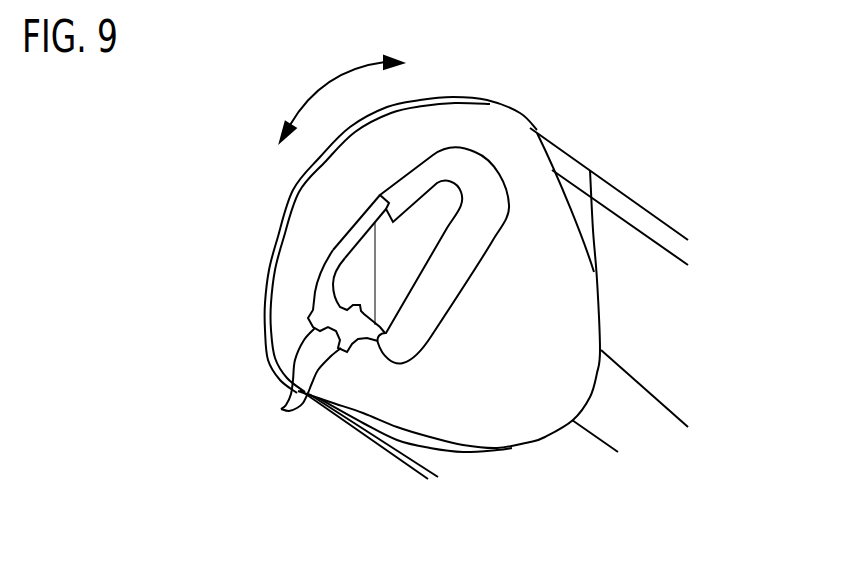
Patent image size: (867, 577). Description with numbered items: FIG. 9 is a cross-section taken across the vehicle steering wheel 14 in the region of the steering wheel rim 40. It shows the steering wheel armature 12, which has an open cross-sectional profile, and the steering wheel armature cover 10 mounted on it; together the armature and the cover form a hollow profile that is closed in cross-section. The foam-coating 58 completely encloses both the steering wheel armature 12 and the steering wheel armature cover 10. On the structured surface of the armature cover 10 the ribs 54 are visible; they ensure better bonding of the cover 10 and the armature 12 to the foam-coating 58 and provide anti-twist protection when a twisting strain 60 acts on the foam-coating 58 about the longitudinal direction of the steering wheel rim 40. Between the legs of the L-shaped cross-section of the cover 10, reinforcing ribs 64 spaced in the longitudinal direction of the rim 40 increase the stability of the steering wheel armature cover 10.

The steering wheel armature cover 10 is at (312, 290).
The steering wheel armature 12 is at (483, 228).
The vehicle steering wheel 14 is at (567, 99).
The steering wheel rim 40 is at (633, 305).
The ribs 54 is at (292, 380).
The foam-coating 58 is at (495, 400).
The twisting strain 60 is at (315, 95).
The reinforcing ribs 64 is at (365, 267).